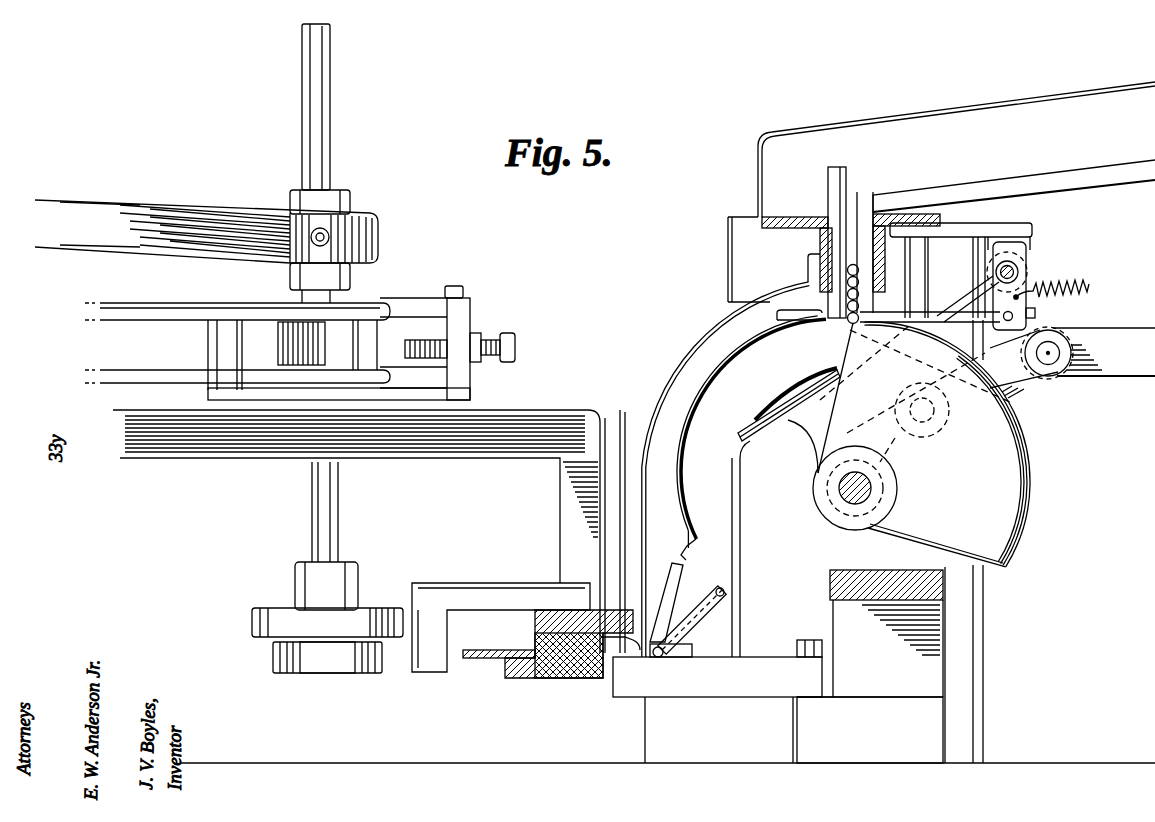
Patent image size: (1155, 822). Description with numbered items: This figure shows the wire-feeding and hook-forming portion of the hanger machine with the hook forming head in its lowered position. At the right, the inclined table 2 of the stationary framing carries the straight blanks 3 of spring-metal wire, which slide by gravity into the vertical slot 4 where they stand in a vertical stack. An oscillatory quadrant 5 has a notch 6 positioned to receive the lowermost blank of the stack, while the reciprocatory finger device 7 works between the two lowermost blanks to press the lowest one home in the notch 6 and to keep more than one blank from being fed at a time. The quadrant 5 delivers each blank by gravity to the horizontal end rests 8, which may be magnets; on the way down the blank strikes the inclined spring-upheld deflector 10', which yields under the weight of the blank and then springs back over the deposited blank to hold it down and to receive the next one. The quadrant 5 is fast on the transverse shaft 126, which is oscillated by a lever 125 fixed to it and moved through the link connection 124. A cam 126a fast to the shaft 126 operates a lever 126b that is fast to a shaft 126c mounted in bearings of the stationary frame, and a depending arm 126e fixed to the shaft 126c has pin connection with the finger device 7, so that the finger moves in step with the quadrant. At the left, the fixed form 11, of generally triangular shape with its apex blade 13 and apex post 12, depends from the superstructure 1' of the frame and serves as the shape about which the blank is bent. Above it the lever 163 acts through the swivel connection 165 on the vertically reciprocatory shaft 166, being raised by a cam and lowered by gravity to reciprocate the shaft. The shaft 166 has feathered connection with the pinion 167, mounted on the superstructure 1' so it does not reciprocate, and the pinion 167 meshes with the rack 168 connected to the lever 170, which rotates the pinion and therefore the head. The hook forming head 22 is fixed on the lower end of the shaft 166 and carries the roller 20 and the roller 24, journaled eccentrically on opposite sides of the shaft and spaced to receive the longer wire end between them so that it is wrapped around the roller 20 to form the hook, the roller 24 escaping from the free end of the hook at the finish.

The superstructure 1' is at (369, 509).
The inclined table 2 is at (1070, 105).
The straight blanks 3 is at (850, 270).
The vertical slot 4 is at (843, 203).
The oscillatory quadrant 5 is at (1033, 473).
The notch 6 is at (848, 326).
The reciprocatory finger device 7 is at (953, 312).
The horizontal end rests 8 is at (705, 683).
The inclined spring-upheld deflector 10' is at (688, 610).
The fixed form 11 is at (532, 679).
The apex post 12 is at (432, 667).
The apex blade 13 is at (485, 660).
The roller 20 is at (375, 672).
The hook forming head 22 is at (255, 620).
The roller 24 is at (327, 664).
The link connection 124 is at (1115, 360).
The lever 125 is at (910, 447).
The transverse shaft 126 is at (842, 495).
The cam 126a is at (810, 440).
The lever 126b is at (778, 412).
The shaft 126c is at (1027, 265).
The depending arm 126e is at (1040, 330).
The lever 163 is at (92, 213).
The swivel connection 165 is at (312, 234).
The vertically reciprocatory shaft 166 is at (333, 76).
The pinion 167 is at (283, 362).
The rack 168 is at (392, 342).
The lever 170 is at (150, 375).